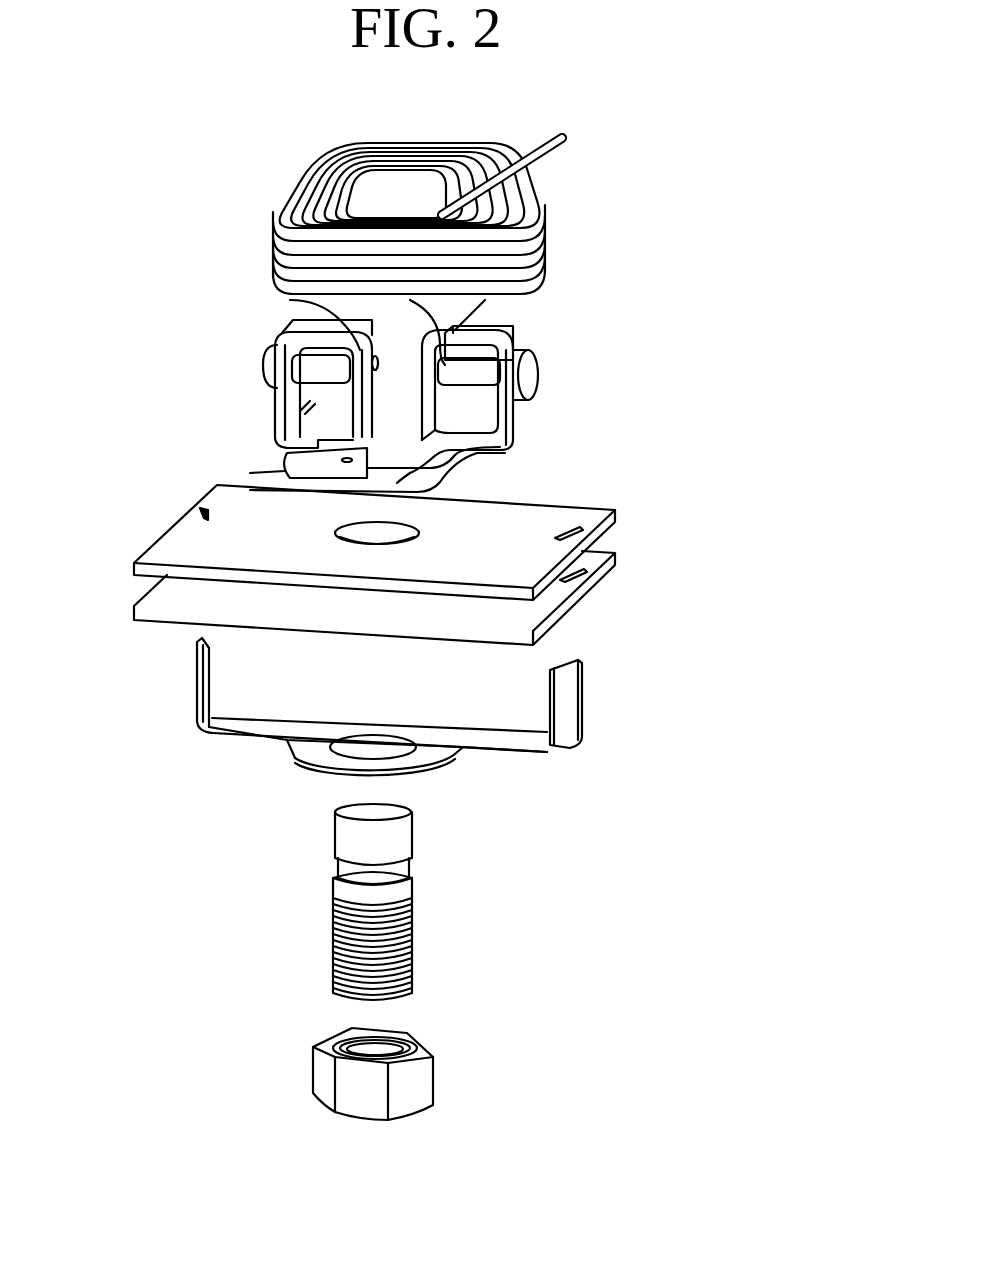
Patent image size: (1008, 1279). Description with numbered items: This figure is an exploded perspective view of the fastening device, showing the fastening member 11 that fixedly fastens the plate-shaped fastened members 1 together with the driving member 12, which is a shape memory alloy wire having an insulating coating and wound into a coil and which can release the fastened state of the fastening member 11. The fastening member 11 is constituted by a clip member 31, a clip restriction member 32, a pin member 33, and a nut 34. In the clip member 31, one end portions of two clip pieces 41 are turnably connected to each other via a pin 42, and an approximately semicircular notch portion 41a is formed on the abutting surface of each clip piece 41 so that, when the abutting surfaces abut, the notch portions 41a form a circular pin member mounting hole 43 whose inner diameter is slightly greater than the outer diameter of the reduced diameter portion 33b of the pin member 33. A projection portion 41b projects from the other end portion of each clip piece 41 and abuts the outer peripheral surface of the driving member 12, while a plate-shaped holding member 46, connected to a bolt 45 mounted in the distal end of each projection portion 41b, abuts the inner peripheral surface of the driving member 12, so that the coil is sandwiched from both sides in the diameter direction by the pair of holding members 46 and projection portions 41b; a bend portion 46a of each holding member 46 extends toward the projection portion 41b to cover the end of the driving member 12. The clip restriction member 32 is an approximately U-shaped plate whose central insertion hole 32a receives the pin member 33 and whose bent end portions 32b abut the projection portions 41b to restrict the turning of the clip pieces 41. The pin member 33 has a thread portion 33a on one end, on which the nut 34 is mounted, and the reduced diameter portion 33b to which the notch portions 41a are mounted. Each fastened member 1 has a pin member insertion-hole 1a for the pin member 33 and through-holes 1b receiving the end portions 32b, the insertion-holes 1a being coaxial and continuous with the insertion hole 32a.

The fastened member 1 is at (160, 540).
The pin member insertion-hole 1a is at (410, 533).
The through-hole 1b is at (200, 512).
The fastening member 11 is at (805, 573).
The driving member 12 is at (557, 155).
The clip member 31 is at (582, 393).
The clip restriction member 32 is at (634, 703).
The insertion hole 32a is at (370, 738).
The end portion 32b is at (198, 665).
The pin member 33 is at (505, 883).
The thread portion 33a is at (335, 947).
The reduced diameter portion 33b is at (338, 865).
The nut 34 is at (437, 1083).
The clip piece 41 is at (287, 443).
The notch portion 41a is at (327, 417).
The projection portion 41b is at (277, 365).
The pin 42 is at (283, 470).
The pin member mounting hole 43 is at (377, 433).
The bolt 45 is at (300, 335).
The holding member 46 is at (330, 345).
The bend portion 46a is at (315, 360).